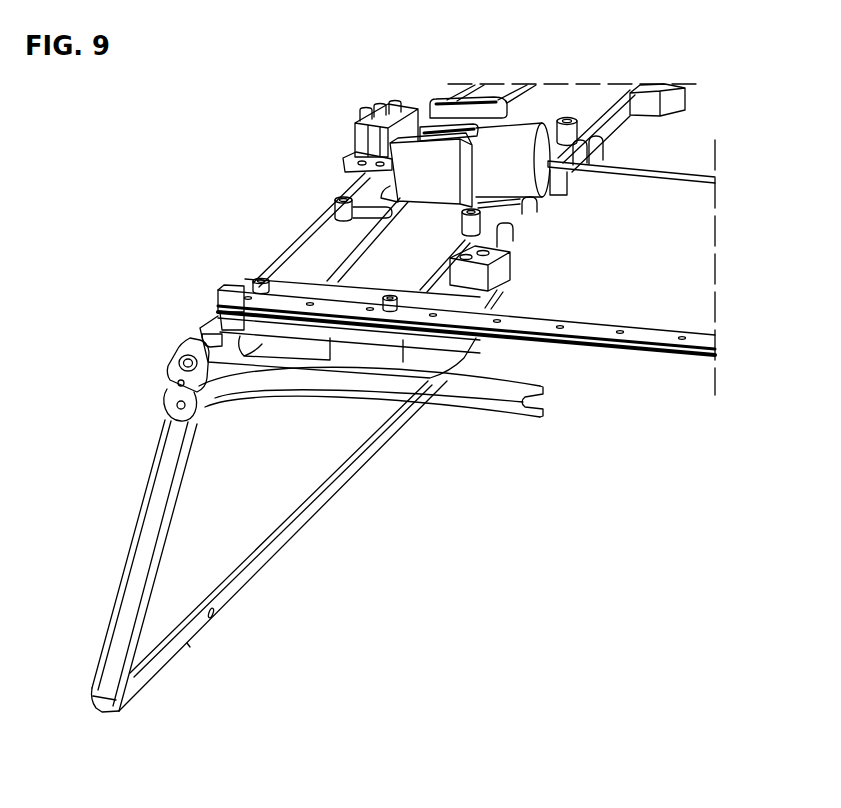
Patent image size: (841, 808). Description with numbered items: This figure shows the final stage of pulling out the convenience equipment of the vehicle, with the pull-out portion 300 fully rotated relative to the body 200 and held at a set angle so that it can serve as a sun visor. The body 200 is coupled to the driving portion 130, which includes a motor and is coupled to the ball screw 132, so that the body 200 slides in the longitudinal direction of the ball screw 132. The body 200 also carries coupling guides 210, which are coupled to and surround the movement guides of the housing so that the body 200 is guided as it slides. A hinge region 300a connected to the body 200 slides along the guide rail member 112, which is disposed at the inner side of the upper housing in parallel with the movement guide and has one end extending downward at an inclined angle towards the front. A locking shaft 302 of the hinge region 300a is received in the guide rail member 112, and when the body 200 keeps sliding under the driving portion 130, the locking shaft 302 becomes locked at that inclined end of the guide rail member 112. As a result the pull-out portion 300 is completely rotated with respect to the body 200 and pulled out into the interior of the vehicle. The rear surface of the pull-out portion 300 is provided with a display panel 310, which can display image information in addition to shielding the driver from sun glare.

The guide rail member 112 is at (487, 414).
The driving portion 130 is at (518, 182).
The ball screw 132 is at (647, 177).
The body 200 is at (323, 246).
The coupling guide 210 is at (264, 309).
The pull-out portion 300 is at (228, 588).
The hinge region 300a is at (185, 360).
The locking shaft 302 is at (168, 416).
The display panel 310 is at (257, 503).